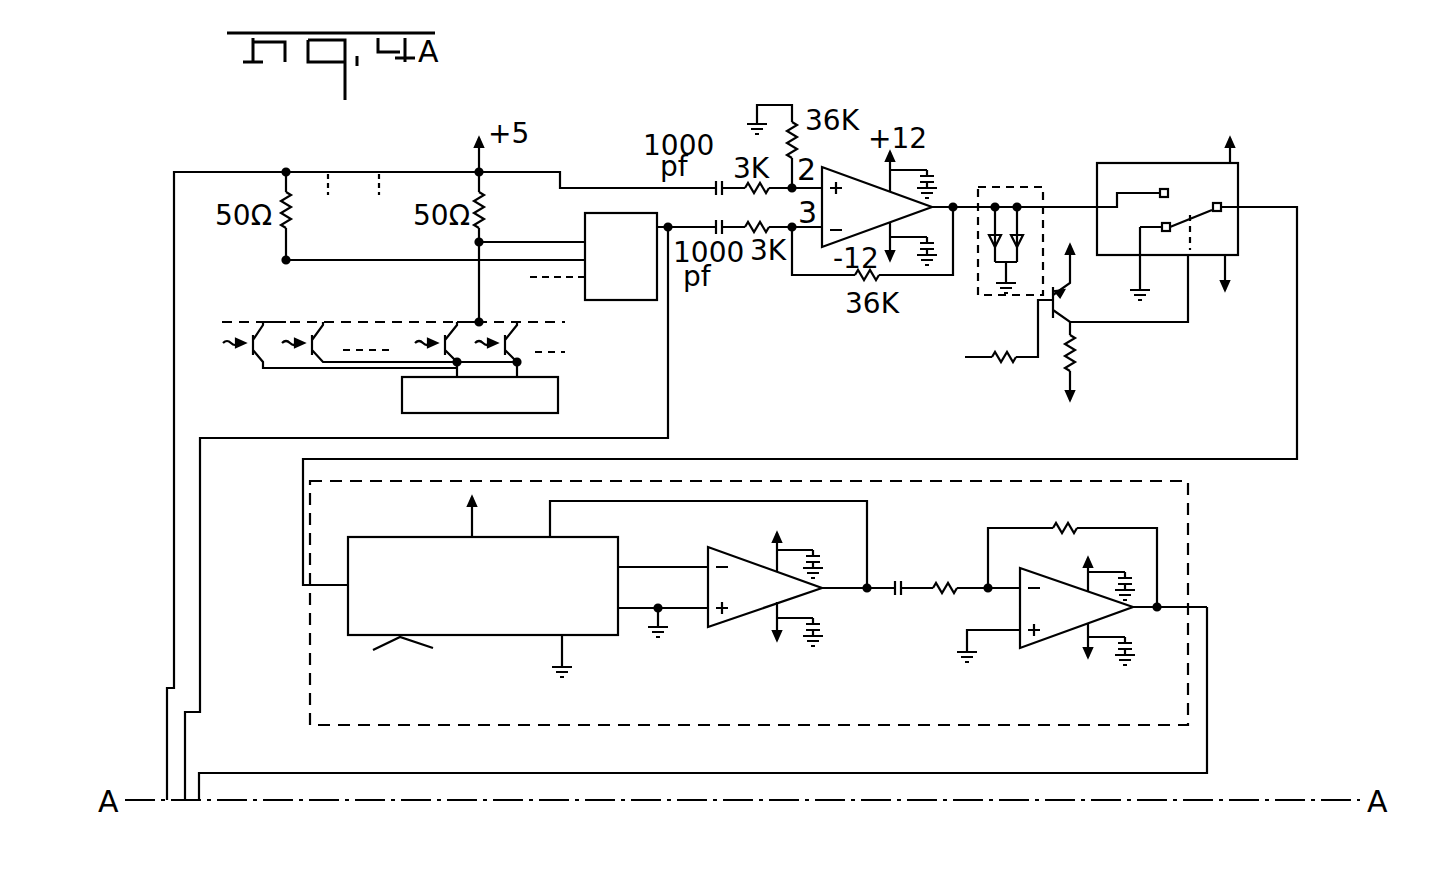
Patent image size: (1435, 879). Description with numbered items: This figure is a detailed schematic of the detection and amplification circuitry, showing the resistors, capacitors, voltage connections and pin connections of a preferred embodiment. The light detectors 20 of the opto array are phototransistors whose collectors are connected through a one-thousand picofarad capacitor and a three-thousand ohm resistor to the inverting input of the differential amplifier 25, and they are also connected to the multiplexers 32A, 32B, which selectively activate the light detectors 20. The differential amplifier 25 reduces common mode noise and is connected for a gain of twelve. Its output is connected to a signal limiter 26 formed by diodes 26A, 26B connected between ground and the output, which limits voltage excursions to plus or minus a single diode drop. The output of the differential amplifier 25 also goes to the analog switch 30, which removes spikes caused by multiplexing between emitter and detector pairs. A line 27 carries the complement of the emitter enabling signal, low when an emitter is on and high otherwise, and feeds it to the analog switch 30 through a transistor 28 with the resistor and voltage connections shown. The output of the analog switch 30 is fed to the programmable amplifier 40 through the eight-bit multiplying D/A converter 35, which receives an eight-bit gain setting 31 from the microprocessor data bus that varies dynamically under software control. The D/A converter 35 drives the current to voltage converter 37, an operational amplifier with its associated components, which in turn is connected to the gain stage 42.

The light detectors 20 is at (253, 352).
The differential amplifier 25 is at (877, 207).
The signal limiter 26 is at (1016, 228).
The diode 26A is at (992, 235).
The diode 26B is at (1022, 235).
The line 27 is at (965, 357).
The transistor 28 is at (1060, 320).
The analog switch 30 is at (1150, 163).
The 8-bit gain setting 31 is at (373, 660).
The multiplexer 32A is at (585, 222).
The multiplexer 32B is at (558, 393).
The D/A converter 35 is at (510, 635).
The current to voltage converter 37 is at (735, 625).
The programmable amplifier 40 is at (667, 725).
The gain stage 42 is at (1020, 638).